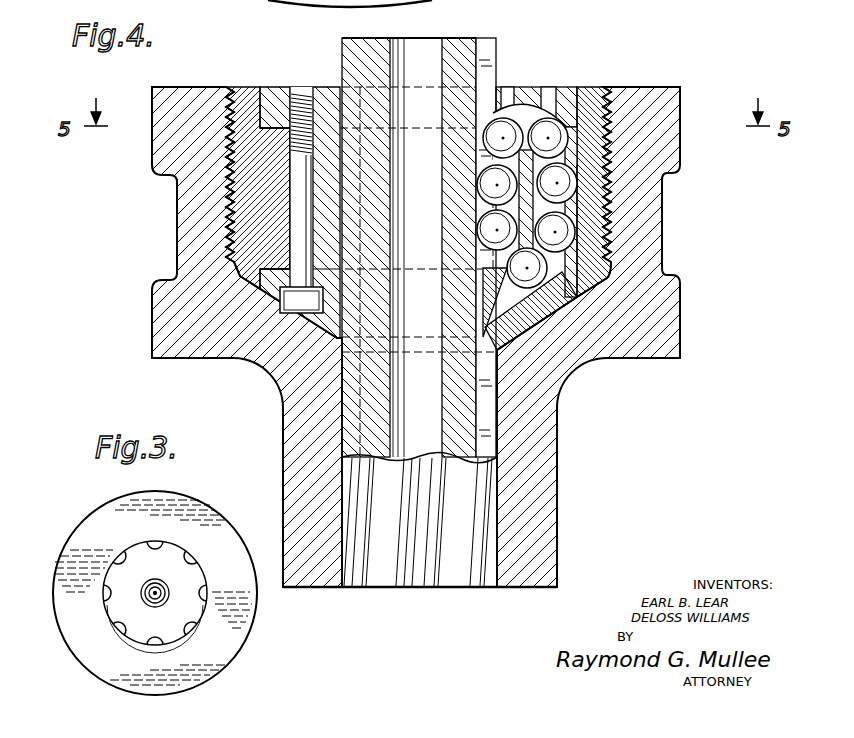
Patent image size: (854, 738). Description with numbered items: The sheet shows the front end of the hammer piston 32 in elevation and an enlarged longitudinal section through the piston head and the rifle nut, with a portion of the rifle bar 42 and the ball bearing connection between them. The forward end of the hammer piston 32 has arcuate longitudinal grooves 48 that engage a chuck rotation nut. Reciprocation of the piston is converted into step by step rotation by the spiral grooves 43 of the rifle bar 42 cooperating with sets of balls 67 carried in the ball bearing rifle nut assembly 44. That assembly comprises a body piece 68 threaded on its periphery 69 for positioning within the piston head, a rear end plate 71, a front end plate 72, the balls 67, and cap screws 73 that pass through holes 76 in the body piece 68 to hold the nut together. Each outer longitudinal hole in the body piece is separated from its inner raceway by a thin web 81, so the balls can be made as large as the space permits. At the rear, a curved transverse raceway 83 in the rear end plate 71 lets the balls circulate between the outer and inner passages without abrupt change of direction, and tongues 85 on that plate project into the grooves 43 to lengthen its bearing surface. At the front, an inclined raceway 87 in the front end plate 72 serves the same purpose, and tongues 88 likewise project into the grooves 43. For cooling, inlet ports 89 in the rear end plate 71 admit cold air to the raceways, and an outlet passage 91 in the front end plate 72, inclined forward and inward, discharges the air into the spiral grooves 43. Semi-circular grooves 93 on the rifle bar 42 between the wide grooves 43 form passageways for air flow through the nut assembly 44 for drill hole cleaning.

In FIG. 3, the hammer piston 32 is at (245, 624).
In FIG. 4, the rifle bar 42 is at (368, 38).
In FIG. 4, the spiral grooves 43 is at (488, 62).
In FIG. 4, the ball bearing rifle nut assembly 44 is at (603, 102).
In FIG. 3, the arcuate longitudinal grooves 48 is at (188, 627).
In FIG. 4, the balls 67 is at (563, 238).
In FIG. 4, the body piece 68 is at (247, 96).
In FIG. 4, the threaded periphery 69 is at (607, 128).
In FIG. 4, the rear end plate 71 is at (275, 87).
In FIG. 4, the front end plate 72 is at (270, 302).
In FIG. 4, the cap screws 73 is at (292, 182).
In FIG. 4, the holes 76 is at (292, 218).
In FIG. 4, the web 81 is at (572, 207).
In FIG. 4, the transverse raceway 83 is at (522, 110).
In FIG. 4, the tongues 85 is at (480, 98).
In FIG. 4, the inclined raceway 87 is at (566, 276).
In FIG. 4, the tongues 88 is at (480, 292).
In FIG. 4, the inlet ports 89 is at (555, 100).
In FIG. 4, the outlet passage 91 is at (517, 307).
In FIG. 4, the semi-circular grooves 93 is at (413, 580).